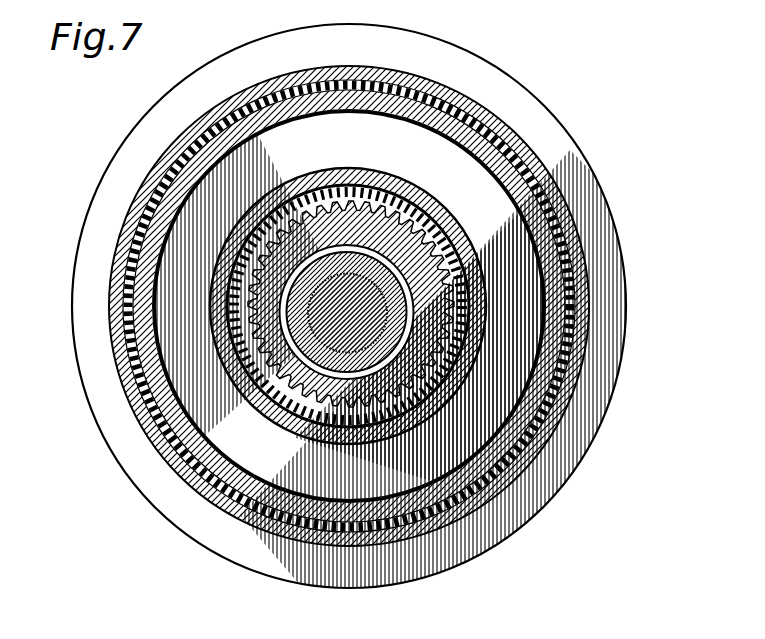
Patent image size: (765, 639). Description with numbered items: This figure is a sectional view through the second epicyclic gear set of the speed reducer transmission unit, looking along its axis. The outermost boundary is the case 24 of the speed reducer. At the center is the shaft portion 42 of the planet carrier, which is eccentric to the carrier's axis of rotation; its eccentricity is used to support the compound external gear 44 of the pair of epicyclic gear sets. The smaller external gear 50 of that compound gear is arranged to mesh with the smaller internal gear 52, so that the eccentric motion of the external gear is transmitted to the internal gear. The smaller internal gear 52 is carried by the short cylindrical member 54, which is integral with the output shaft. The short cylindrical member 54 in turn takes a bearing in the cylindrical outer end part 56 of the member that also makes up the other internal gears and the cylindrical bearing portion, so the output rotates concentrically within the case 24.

The case 24 is at (518, 83).
The shaft portion 42 is at (358, 305).
The compound external gear 44 is at (398, 314).
The smaller external gear 50 is at (407, 192).
The smaller internal gear 52 is at (376, 175).
The short cylindrical member 54 is at (350, 168).
The cylindrical outer end part 56 is at (386, 68).